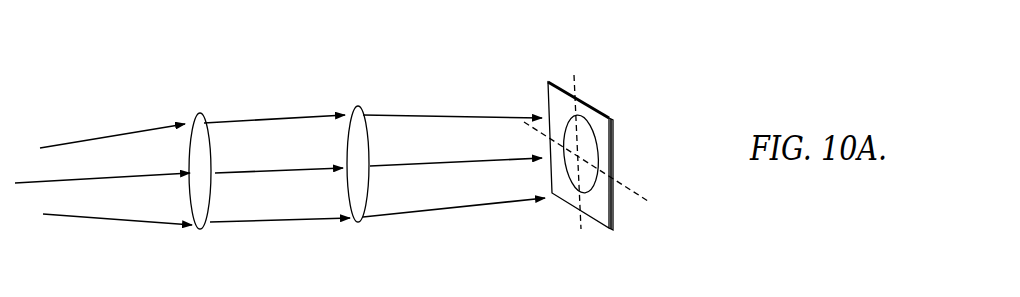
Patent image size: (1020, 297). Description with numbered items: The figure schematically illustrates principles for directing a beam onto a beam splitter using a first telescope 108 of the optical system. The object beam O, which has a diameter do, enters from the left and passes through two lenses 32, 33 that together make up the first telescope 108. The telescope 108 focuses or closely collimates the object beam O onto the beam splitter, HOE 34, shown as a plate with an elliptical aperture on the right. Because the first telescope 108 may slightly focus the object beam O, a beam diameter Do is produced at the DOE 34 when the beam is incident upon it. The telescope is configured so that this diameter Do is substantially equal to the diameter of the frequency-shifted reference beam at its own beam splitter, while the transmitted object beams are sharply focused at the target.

The first telescope 108 is at (229, 80).
The lens 32 is at (202, 229).
The lens 33 is at (360, 222).
The HOE 34 is at (612, 210).
The object beam O is at (284, 114).
The diameter of the object beam do is at (441, 249).
The beam diameter at the DOE Do is at (595, 137).